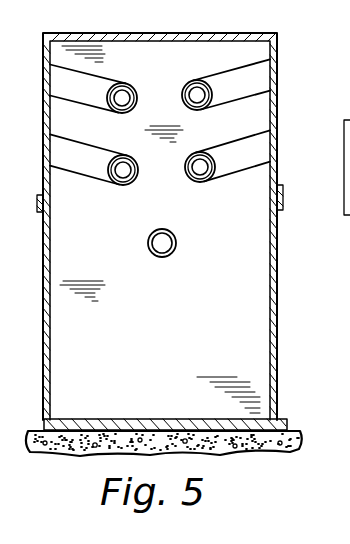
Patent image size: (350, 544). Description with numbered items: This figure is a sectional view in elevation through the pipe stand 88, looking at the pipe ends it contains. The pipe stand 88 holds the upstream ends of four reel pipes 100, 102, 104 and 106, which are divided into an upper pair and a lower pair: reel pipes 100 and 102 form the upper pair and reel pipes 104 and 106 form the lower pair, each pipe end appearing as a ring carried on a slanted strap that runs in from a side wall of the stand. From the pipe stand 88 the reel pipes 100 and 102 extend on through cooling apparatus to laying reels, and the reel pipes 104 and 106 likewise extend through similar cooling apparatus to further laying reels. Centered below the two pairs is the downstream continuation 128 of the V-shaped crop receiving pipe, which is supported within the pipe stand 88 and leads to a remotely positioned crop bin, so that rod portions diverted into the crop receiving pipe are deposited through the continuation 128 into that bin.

The pipe stand 88 is at (280, 333).
The reel pipe 100 is at (193, 81).
The reel pipe 102 is at (140, 71).
The reel pipe 104 is at (203, 183).
The reel pipe 106 is at (123, 186).
The downstream continuation of crop receiving pipe 128 is at (172, 254).